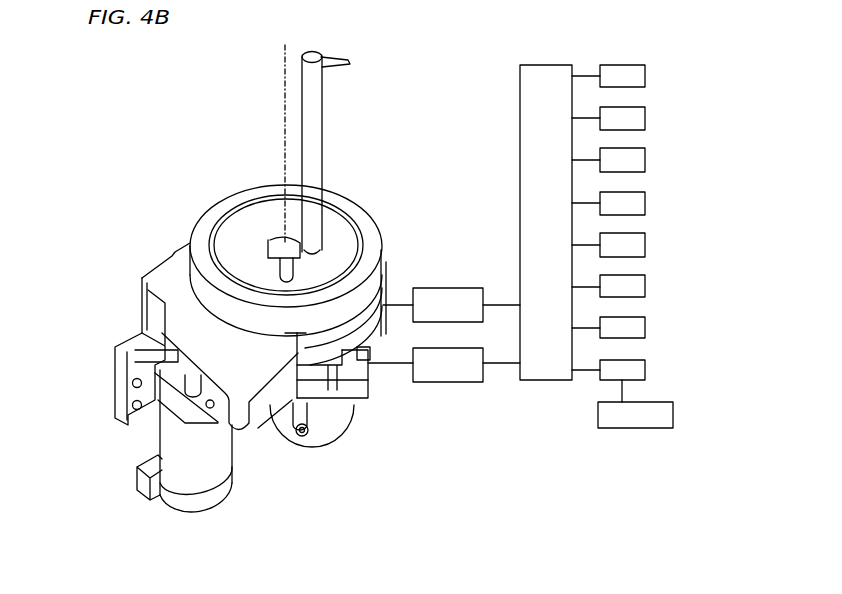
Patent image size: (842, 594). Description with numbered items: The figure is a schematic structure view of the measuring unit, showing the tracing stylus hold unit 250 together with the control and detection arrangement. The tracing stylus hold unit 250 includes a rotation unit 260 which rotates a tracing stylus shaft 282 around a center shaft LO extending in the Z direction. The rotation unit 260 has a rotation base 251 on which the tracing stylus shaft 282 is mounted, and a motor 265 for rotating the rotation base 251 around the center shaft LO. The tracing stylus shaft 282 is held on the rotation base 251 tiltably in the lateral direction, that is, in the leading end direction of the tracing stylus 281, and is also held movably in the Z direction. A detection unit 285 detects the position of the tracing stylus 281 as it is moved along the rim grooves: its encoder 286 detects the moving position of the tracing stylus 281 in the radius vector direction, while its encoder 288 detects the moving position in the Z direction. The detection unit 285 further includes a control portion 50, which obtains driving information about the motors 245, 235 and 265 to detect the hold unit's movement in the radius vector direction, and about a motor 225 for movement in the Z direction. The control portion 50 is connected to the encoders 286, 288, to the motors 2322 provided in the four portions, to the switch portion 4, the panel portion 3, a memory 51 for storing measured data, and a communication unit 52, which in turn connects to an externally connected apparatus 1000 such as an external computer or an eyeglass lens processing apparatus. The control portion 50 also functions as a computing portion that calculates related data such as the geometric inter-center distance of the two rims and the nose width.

The tracing stylus hold unit 250 is at (182, 197).
The center shaft LO is at (284, 130).
The tracing stylus 281 is at (351, 63).
The tracing stylus shaft 282 is at (314, 126).
The rotation base 251 is at (373, 246).
The rotation unit 260 is at (356, 440).
The motor 265 is at (208, 468).
The detection unit 285 is at (567, 440).
The encoder 286 is at (437, 297).
The encoder 288 is at (427, 381).
The control portion 50 is at (543, 381).
The motors 2322 is at (637, 82).
The motor 235 is at (637, 124).
The motor 245 is at (637, 166).
The motor 225 is at (637, 209).
The switch portion 4 is at (637, 251).
The panel portion 3 is at (637, 293).
The memory 51 is at (637, 334).
The communication unit 52 is at (637, 376).
The externally connected apparatus 1000 is at (632, 429).